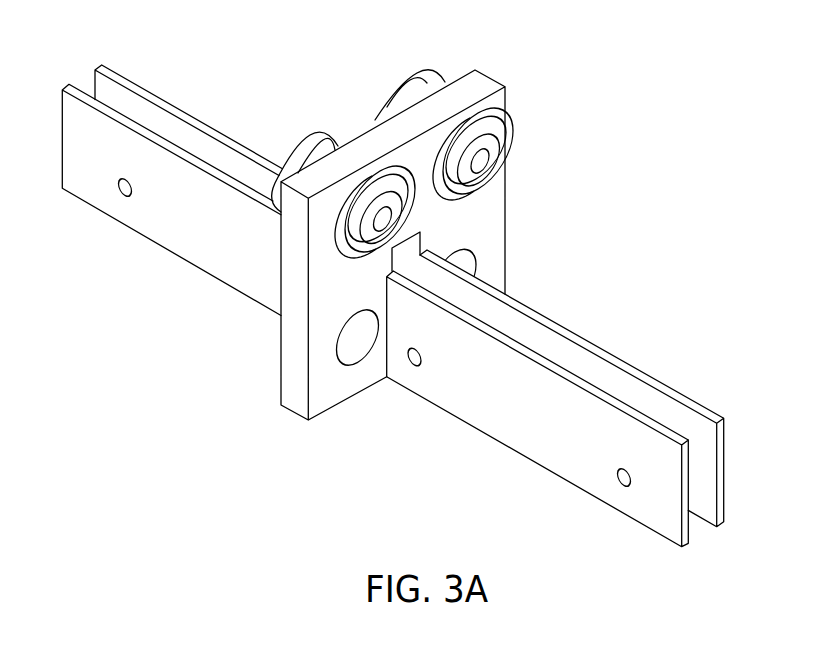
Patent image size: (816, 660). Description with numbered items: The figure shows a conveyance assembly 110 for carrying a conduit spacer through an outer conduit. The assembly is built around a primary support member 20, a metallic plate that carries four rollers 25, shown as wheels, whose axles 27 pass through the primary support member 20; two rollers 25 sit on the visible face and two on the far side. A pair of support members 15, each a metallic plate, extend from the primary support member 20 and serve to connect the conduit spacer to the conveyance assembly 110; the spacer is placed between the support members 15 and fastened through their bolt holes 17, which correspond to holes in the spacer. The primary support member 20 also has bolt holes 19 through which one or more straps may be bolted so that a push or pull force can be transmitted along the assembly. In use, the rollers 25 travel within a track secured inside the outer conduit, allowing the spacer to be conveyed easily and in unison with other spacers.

The conveyance assembly 110 is at (652, 127).
The support members 15 is at (667, 542).
The bolt holes 17 is at (122, 198).
The bolt holes 19 is at (337, 347).
The primary support member 20 is at (505, 215).
The rollers 25 is at (300, 131).
The axles 27 is at (381, 220).